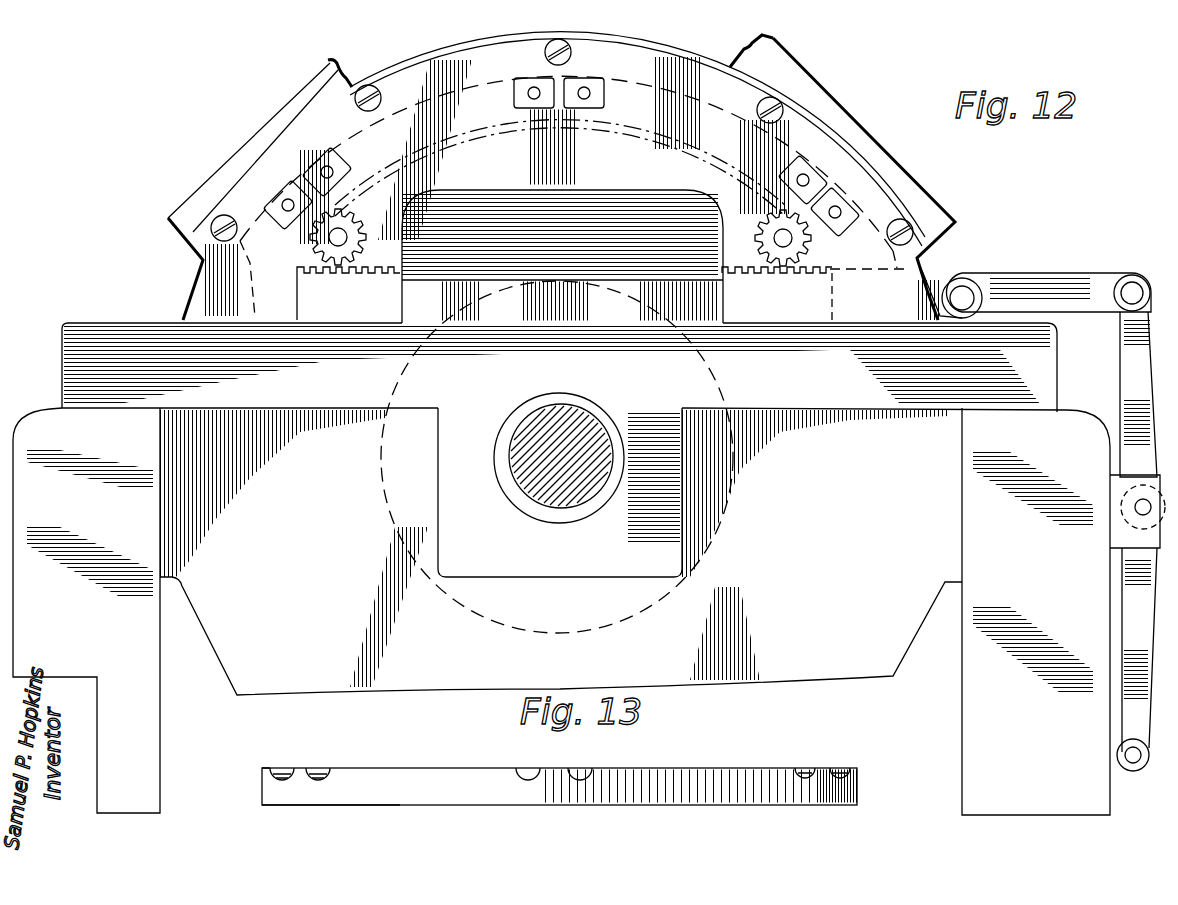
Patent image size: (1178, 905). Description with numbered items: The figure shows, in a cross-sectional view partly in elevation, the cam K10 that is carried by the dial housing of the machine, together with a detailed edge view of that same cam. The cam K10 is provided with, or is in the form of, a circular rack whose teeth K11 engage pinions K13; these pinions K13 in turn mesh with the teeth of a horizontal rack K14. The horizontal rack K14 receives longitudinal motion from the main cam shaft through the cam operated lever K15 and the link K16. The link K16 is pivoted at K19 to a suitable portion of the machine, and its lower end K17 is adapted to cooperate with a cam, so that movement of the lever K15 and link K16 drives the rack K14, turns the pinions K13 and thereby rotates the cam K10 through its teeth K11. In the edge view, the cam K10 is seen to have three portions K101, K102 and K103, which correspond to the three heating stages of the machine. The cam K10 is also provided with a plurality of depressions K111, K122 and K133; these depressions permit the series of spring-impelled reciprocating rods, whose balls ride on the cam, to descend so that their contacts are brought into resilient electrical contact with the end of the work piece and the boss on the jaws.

In FIG. 12, the cam K10 is at (452, 134).
In FIG. 13, the cam K10 is at (443, 764).
In FIG. 12, the teeth K11 is at (357, 177).
In FIG. 12, the pinions K13 is at (327, 244).
In FIG. 12, the horizontal rack K14 is at (766, 272).
In FIG. 12, the cam operated lever K15 is at (1069, 275).
In FIG. 12, the link K16 is at (1130, 372).
In FIG. 12, the lower end of the link K17 is at (1130, 755).
In FIG. 12, the pivot K19 is at (1137, 512).
In FIG. 13, the cam portion K101 is at (298, 790).
In FIG. 13, the cam portion K102 is at (553, 794).
In FIG. 13, the cam portion K103 is at (823, 802).
In FIG. 13, the depression K111 is at (317, 765).
In FIG. 13, the depression K122 is at (537, 775).
In FIG. 13, the depression K133 is at (823, 740).